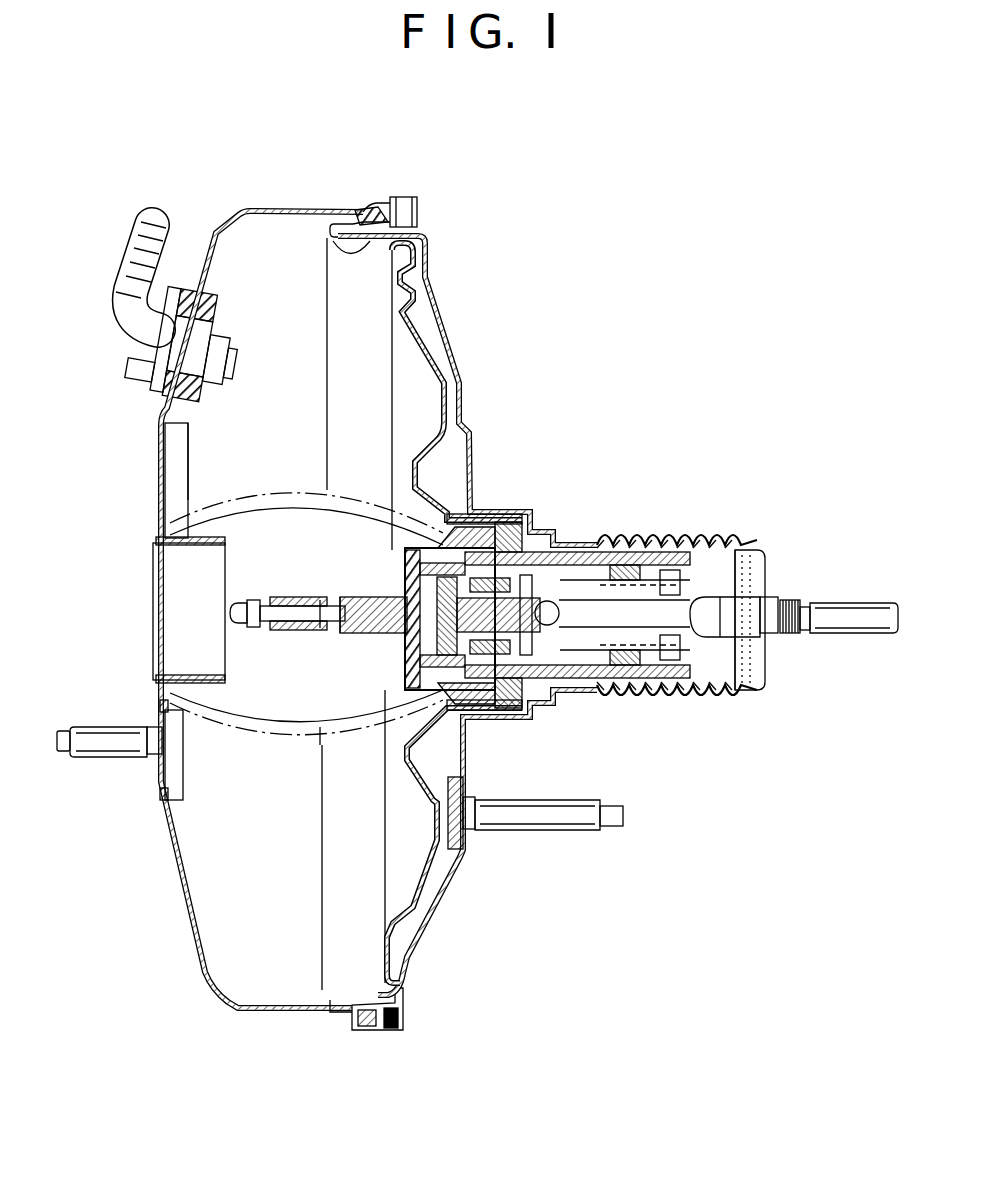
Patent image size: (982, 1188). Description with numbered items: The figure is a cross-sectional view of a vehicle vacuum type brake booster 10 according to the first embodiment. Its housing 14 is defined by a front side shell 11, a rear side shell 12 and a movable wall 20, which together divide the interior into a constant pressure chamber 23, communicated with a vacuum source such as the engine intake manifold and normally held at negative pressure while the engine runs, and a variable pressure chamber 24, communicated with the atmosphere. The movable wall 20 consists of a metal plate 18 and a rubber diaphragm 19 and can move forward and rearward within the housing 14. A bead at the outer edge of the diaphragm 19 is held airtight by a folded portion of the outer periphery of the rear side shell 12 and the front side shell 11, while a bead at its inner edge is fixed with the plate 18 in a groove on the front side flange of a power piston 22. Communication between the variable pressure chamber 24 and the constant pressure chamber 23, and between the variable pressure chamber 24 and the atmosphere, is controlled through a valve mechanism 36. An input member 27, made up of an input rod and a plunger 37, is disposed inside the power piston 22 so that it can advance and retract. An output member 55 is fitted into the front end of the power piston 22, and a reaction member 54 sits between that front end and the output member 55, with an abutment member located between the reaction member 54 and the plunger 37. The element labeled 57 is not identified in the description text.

The vacuum type brake booster 10 is at (612, 348).
The front side shell 11 is at (165, 846).
The rear side shell 12 is at (430, 910).
The housing 14 is at (203, 977).
The metal plate 18 is at (383, 342).
The rubber diaphragm 19 is at (330, 248).
The movable wall 20 is at (440, 327).
The power piston 22 is at (597, 543).
The constant pressure chamber 23 is at (206, 908).
The variable pressure chamber 24 is at (404, 938).
The input member 27 is at (748, 627).
The valve mechanism 36 is at (634, 700).
The plunger 37 is at (550, 580).
The reaction member 54 is at (385, 582).
The output member 55 is at (383, 630).
The mounting bracket 57 is at (163, 495).